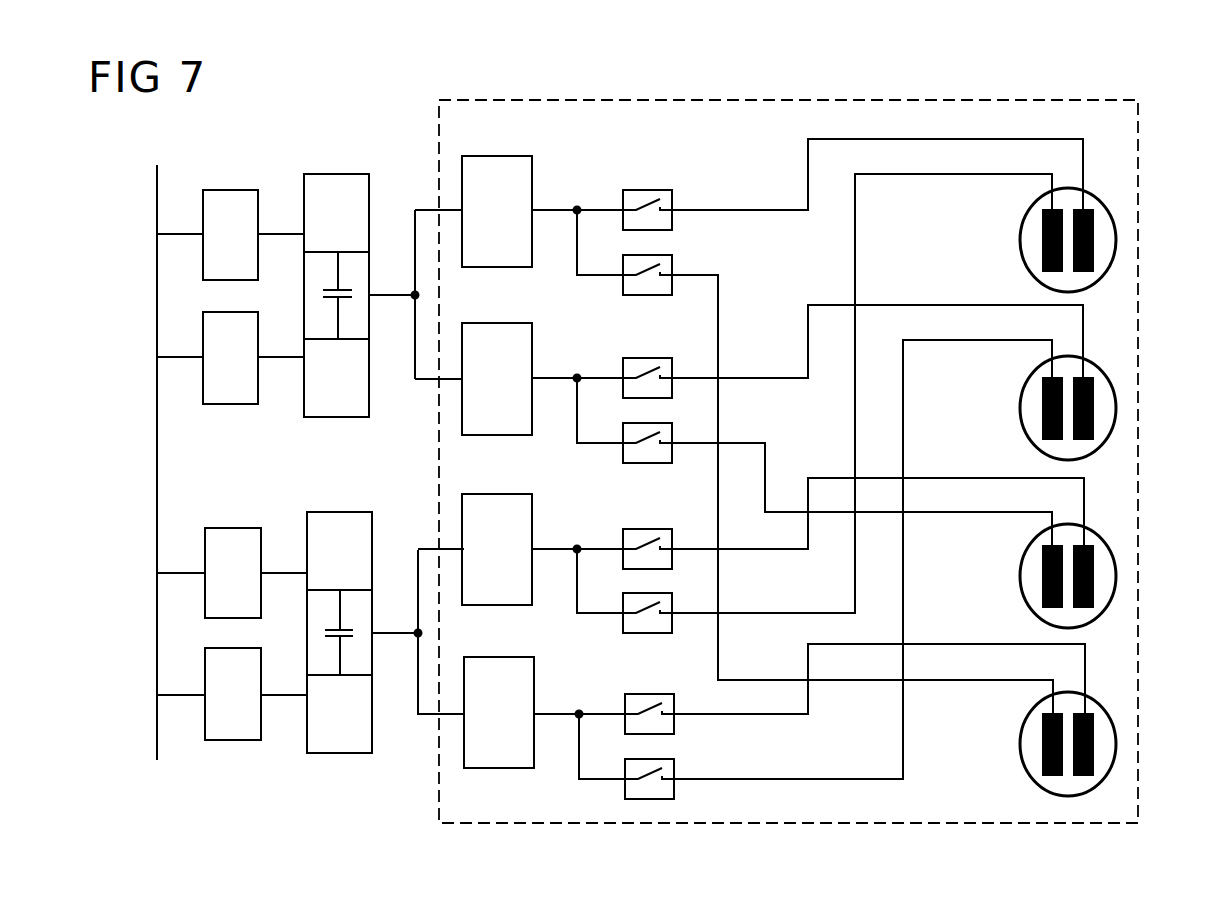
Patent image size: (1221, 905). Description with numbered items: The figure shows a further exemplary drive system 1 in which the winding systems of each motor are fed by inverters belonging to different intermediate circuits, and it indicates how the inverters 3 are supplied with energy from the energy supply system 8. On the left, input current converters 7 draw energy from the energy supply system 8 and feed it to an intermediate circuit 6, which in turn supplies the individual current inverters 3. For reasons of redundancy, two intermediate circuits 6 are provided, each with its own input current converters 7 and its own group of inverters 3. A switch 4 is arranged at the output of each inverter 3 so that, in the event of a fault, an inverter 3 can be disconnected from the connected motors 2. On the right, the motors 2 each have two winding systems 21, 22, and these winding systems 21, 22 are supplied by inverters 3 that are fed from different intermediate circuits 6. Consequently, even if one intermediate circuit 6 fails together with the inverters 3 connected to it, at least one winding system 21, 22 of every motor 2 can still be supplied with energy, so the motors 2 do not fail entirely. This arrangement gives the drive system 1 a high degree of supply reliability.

The drive system 1 is at (1138, 145).
The motor 2 is at (1071, 477).
The winding system 21 is at (1093, 243).
The winding system 22 is at (1043, 243).
The inverter 3 is at (532, 178).
The switch 4 is at (640, 190).
The intermediate circuit 6 is at (320, 174).
The input current converter 7 is at (233, 190).
The energy supply system 8 is at (157, 280).